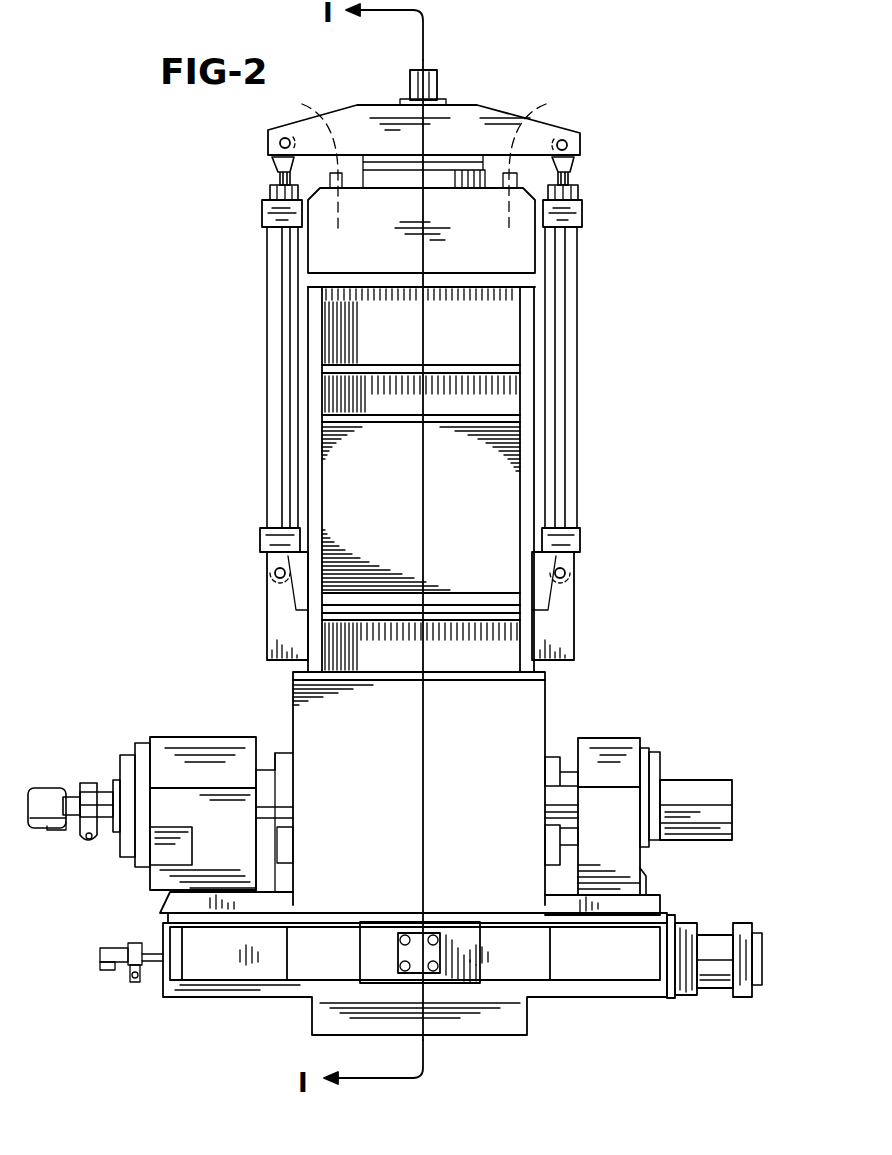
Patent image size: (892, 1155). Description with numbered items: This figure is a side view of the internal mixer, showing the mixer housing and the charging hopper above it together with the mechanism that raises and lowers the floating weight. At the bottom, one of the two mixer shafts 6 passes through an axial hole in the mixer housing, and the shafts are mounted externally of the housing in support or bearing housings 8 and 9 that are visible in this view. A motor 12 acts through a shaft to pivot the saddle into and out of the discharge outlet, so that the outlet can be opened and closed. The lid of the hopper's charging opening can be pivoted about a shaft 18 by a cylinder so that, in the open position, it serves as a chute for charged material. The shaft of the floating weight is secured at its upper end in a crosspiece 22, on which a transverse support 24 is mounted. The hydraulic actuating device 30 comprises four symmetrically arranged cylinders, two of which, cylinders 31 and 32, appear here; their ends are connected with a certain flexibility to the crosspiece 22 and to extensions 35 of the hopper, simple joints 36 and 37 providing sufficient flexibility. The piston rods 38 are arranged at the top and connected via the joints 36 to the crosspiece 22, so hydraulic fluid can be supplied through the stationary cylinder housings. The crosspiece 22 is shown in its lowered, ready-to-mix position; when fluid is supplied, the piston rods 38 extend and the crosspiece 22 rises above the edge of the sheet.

The mixer shaft 6 is at (706, 785).
The bearing housing 8 is at (190, 740).
The bearing housing 9 is at (618, 740).
The motor 12 is at (712, 985).
The shaft 18 is at (460, 605).
The crosspiece 22 is at (447, 100).
The transverse support 24 is at (493, 110).
The hydraulic actuating device 30 is at (387, 376).
The cylinder 31 is at (268, 337).
The cylinder 32 is at (578, 372).
The extension 35 is at (278, 608).
The joint 36 is at (278, 143).
The joint 37 is at (275, 573).
The piston rod 38 is at (278, 178).